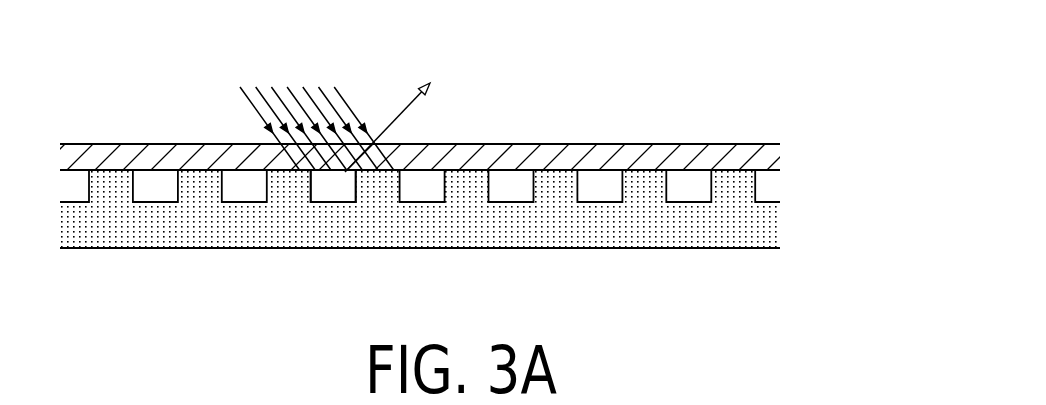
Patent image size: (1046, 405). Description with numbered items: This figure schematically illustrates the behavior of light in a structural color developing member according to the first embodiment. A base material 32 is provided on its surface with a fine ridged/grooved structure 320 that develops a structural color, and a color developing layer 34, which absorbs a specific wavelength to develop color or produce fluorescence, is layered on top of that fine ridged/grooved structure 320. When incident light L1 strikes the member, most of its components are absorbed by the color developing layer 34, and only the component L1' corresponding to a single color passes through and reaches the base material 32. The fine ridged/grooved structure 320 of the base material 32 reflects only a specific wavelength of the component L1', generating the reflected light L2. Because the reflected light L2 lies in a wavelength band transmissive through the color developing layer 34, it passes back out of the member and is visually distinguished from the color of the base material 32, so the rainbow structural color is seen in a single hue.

The base material 32 is at (758, 223).
The fine ridged/grooved structure 320 is at (764, 188).
The color developing layer 34 is at (758, 151).
The incident light L1 is at (317, 111).
The component corresponding to the single color L1' is at (315, 228).
The reflected light L2 is at (410, 111).